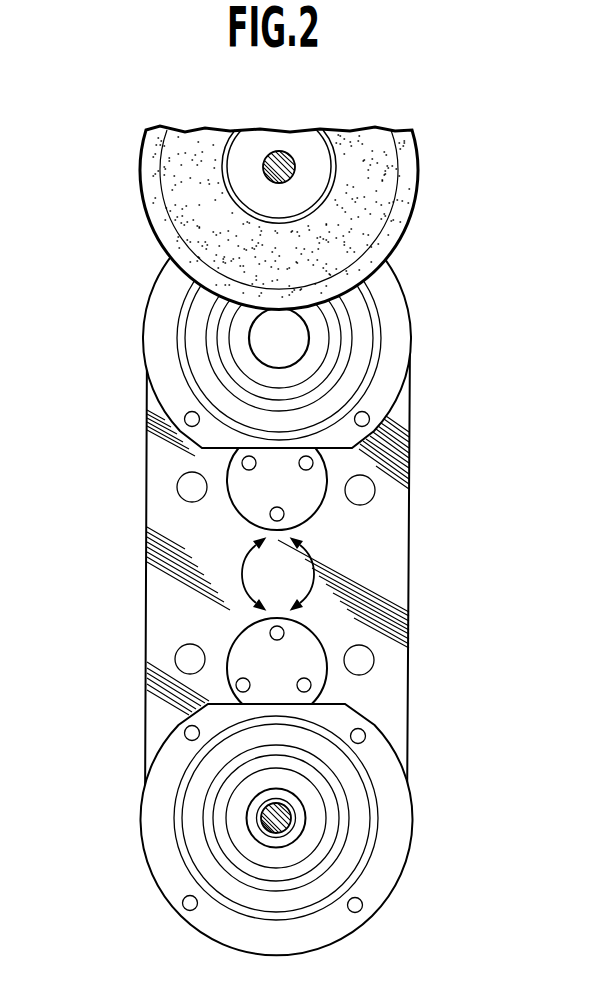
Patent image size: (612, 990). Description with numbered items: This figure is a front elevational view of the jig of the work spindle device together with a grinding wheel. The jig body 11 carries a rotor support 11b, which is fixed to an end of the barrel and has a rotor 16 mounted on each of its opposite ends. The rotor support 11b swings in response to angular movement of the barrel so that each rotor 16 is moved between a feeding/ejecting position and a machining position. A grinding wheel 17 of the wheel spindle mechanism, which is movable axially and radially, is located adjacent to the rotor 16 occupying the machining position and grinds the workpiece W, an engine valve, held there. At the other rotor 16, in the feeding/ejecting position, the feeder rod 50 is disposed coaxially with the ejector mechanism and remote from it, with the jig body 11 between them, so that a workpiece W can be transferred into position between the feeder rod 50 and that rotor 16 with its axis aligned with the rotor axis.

The jig body 11 is at (138, 565).
The rotor support 11b is at (390, 558).
The rotor 16 is at (363, 355).
The grinding wheel 17 is at (383, 204).
The workpiece W is at (262, 338).
The feeder rod 50 is at (283, 823).